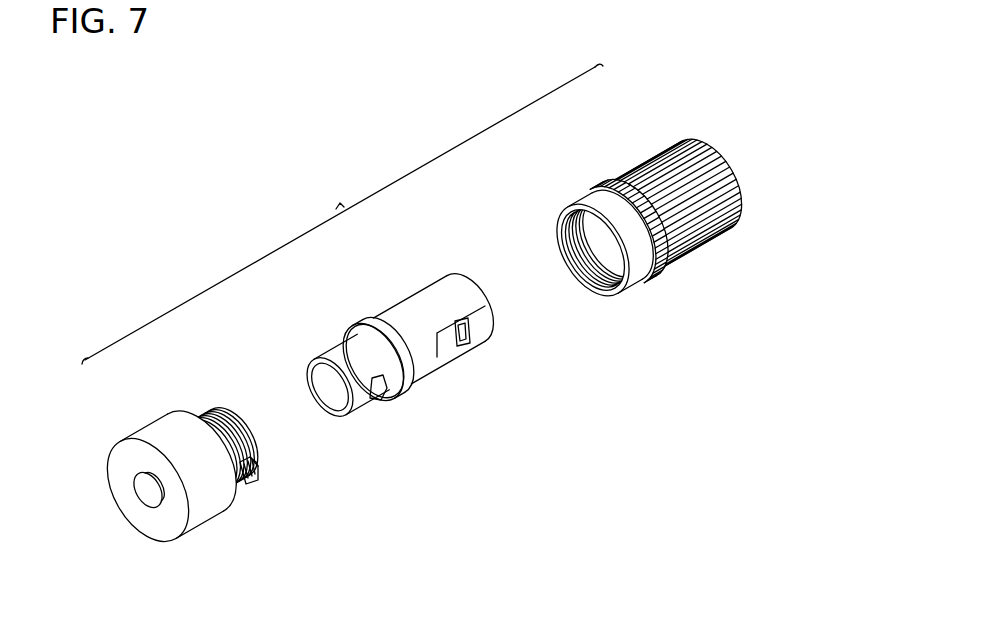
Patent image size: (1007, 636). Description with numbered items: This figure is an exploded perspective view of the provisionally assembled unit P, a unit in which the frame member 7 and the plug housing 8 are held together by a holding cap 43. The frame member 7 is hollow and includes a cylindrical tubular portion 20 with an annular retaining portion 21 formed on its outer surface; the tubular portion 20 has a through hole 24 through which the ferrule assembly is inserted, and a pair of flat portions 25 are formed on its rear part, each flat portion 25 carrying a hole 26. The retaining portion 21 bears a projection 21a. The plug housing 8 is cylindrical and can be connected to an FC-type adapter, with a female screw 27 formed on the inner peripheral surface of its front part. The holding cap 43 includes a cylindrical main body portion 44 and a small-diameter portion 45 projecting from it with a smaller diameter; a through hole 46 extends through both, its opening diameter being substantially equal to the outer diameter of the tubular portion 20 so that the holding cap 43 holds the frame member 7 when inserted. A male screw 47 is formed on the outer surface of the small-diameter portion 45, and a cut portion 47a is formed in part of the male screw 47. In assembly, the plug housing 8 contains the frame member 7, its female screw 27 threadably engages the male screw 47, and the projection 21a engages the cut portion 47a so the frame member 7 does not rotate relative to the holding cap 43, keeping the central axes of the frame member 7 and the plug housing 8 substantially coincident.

The provisionally assembled unit P is at (342, 214).
The frame member 7 is at (414, 375).
The plug housing 8 is at (649, 226).
The tubular portion 20 is at (437, 295).
The retaining portion 21 is at (395, 380).
The projection 21a is at (373, 402).
The through hole 24 is at (330, 393).
The flat portion 25 is at (444, 344).
The hole 26 is at (470, 347).
The female screw 27 is at (596, 294).
The holding cap 43 is at (216, 466).
The main body portion 44 is at (197, 513).
The small-diameter portion 45 is at (214, 412).
The through hole 46 is at (150, 500).
The male screw 47 is at (240, 478).
The cut portion 47a is at (257, 458).